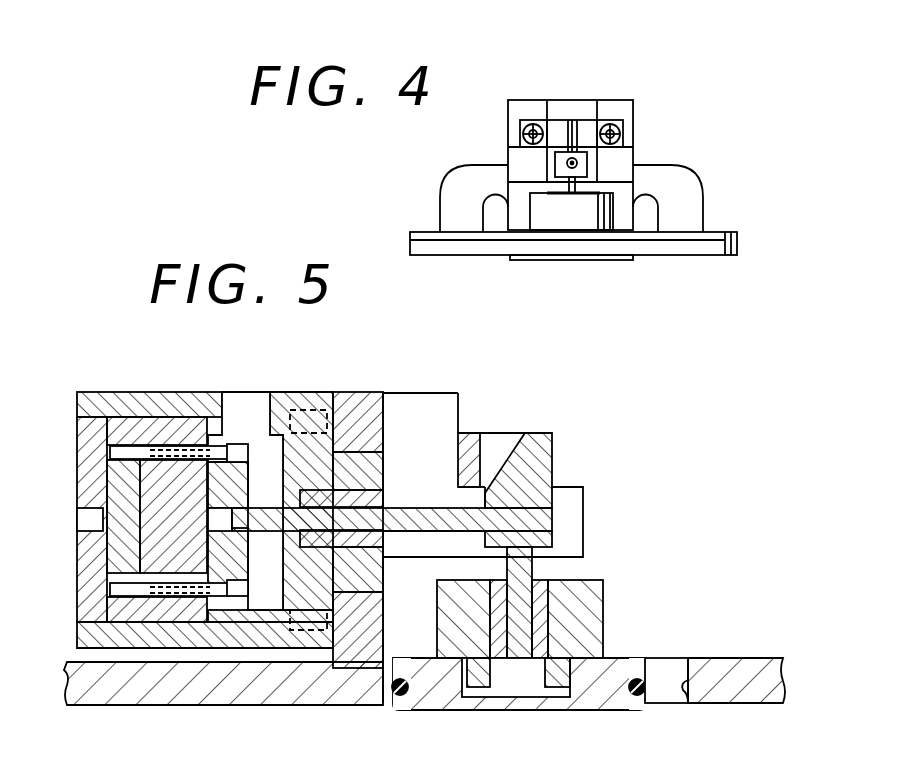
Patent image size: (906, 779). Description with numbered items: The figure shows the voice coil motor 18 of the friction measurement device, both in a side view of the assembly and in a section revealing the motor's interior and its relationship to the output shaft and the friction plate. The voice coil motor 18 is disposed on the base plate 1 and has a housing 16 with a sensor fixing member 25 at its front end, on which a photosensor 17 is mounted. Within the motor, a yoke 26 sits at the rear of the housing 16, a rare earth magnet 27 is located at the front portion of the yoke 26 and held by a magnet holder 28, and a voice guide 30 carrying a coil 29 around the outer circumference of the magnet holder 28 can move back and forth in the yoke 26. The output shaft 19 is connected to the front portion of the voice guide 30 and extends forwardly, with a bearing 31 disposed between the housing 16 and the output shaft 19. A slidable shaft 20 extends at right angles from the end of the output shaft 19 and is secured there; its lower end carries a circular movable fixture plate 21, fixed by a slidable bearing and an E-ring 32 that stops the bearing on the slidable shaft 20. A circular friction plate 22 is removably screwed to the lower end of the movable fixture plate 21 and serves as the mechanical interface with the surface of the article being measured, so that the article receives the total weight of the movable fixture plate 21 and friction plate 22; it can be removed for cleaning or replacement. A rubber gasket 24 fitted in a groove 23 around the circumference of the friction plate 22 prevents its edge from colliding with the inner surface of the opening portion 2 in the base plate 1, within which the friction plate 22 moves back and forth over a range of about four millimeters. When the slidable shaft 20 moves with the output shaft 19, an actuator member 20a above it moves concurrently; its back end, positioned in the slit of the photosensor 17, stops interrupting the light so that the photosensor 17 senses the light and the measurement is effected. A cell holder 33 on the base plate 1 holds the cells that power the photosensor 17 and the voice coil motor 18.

In FIG. 4, the base plate 1 is at (682, 253).
In FIG. 5, the base plate 1 is at (752, 658).
In FIG. 5, the opening portion 2 is at (683, 687).
In FIG. 5, the housing 16 is at (280, 393).
In FIG. 4, the photosensor 17 is at (557, 130).
In FIG. 5, the photosensor 17 is at (470, 436).
In FIG. 5, the voice coil motor 18 is at (183, 392).
In FIG. 4, the output shaft 19 is at (578, 163).
In FIG. 5, the output shaft 19 is at (410, 512).
In FIG. 4, the slidable shaft 20 is at (565, 182).
In FIG. 5, the slidable shaft 20 is at (532, 572).
In FIG. 5, the actuator member 20a is at (517, 465).
In FIG. 4, the movable fixture plate 21 is at (548, 220).
In FIG. 5, the movable fixture plate 21 is at (598, 613).
In FIG. 4, the friction plate 22 is at (577, 260).
In FIG. 5, the friction plate 22 is at (588, 708).
In FIG. 5, the groove 23 is at (637, 712).
In FIG. 5, the rubber gasket 24 is at (650, 663).
In FIG. 4, the sensor fixing member 25 is at (618, 108).
In FIG. 5, the sensor fixing member 25 is at (398, 398).
In FIG. 5, the yoke 26 is at (103, 423).
In FIG. 5, the rare earth magnet 27 is at (125, 563).
In FIG. 5, the magnet holder 28 is at (163, 558).
In FIG. 5, the coil 29 is at (197, 588).
In FIG. 5, the voice guide 30 is at (237, 447).
In FIG. 5, the bearing 31 is at (327, 537).
In FIG. 5, the E-ring 32 is at (502, 670).
In FIG. 4, the cell holder 33 is at (695, 187).